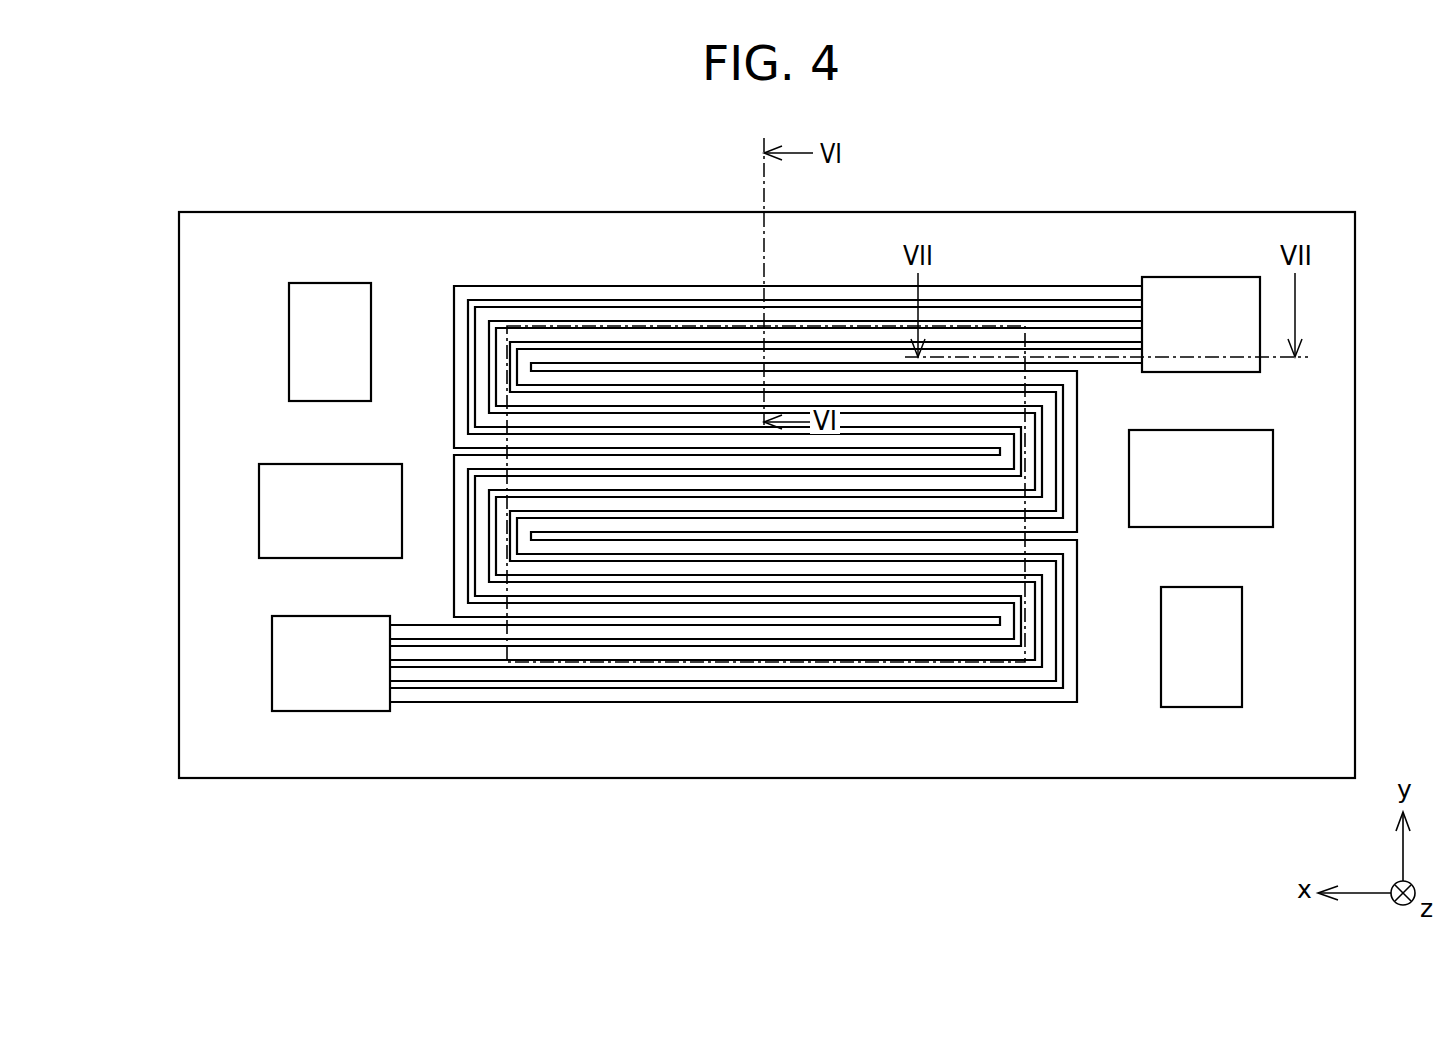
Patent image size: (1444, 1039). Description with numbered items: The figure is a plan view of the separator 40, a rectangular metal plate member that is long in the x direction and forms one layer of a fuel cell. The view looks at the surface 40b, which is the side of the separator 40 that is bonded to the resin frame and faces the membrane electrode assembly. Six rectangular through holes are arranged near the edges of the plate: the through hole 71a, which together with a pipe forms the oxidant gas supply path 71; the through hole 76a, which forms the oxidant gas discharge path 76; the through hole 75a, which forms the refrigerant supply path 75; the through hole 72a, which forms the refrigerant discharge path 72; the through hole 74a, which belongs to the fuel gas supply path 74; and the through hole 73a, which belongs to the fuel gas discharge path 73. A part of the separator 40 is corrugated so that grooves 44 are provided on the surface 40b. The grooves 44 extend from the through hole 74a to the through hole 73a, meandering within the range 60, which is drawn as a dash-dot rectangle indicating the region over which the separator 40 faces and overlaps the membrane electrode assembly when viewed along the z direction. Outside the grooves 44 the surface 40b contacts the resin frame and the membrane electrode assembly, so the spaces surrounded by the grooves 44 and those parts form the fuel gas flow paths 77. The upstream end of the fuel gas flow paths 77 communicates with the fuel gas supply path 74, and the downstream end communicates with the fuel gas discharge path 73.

The separator 40 is at (193, 179).
The surface 40b is at (535, 253).
The grooves 44 is at (1127, 352).
The fuel gas flow paths 77 is at (766, 422).
The range 60 is at (765, 650).
The oxidant gas supply path 71 is at (237, 342).
The through hole 71a is at (302, 340).
The refrigerant discharge path 72 is at (252, 521).
The through hole 72a is at (272, 515).
The fuel gas discharge path 73 is at (246, 673).
The through hole 73a is at (285, 662).
The fuel gas supply path 74 is at (1211, 257).
The through hole 74a is at (1207, 293).
The refrigerant supply path 75 is at (1279, 478).
The through hole 75a is at (1258, 480).
The oxidant gas discharge path 76 is at (1295, 649).
The through hole 76a is at (1230, 647).